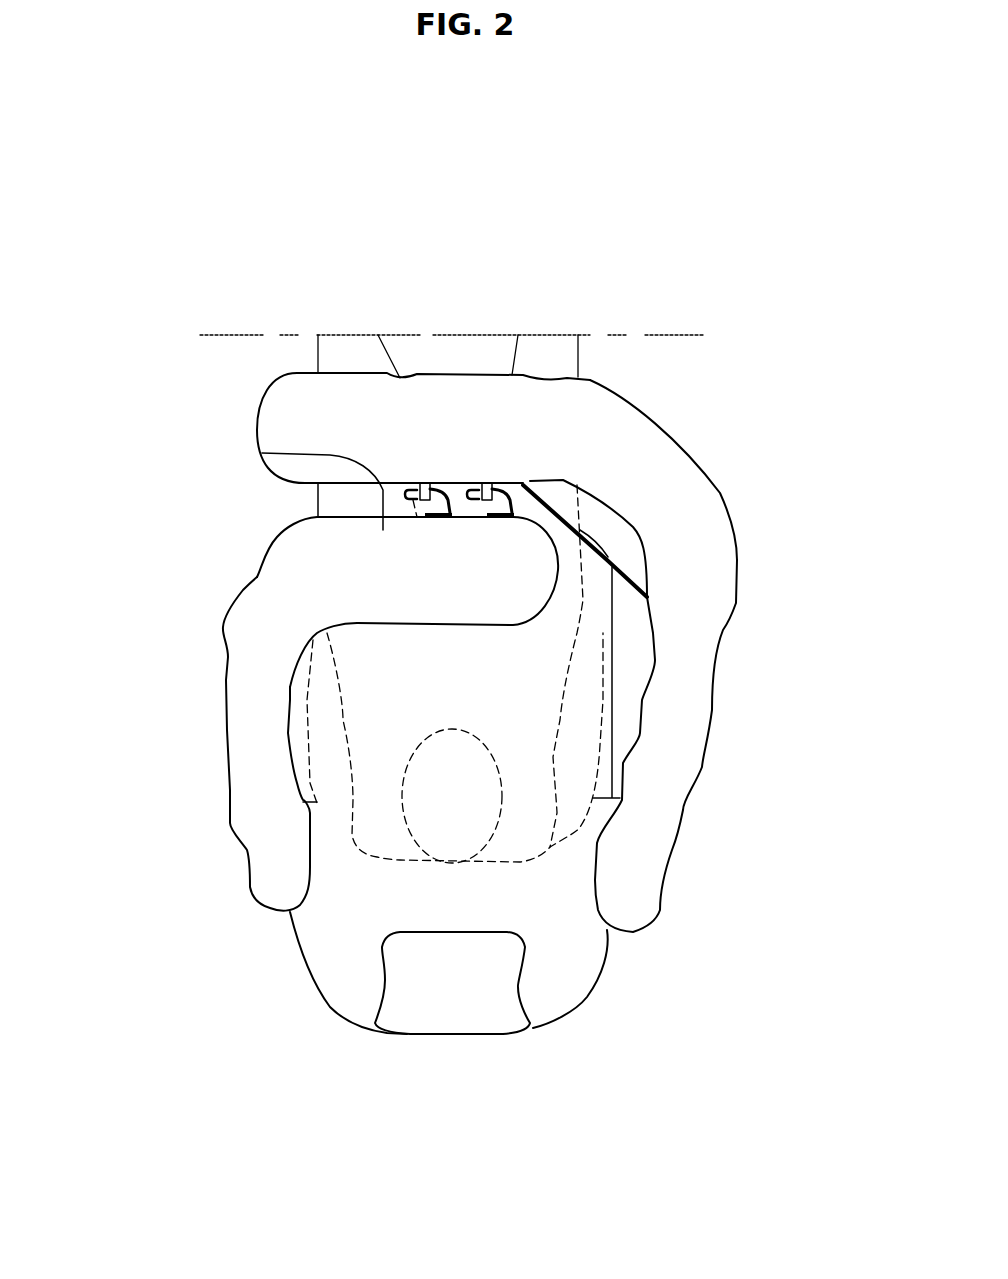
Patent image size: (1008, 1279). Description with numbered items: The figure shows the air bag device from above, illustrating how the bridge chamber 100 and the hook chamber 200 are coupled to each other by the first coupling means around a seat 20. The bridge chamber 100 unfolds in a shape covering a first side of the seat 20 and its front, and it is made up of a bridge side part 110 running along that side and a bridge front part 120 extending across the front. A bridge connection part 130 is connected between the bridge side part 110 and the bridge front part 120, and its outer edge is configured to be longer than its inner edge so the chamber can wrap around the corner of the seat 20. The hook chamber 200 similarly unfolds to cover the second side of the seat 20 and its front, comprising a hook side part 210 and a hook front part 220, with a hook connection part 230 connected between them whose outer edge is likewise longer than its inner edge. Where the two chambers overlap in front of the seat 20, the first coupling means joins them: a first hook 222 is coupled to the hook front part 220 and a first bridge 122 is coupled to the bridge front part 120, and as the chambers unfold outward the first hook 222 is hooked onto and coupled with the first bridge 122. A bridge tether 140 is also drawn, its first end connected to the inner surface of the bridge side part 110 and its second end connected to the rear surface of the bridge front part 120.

The seat 20 is at (455, 1052).
The bridge chamber 100 is at (566, 546).
The bridge side part 110 is at (693, 725).
The bridge front part 120 is at (441, 403).
The first bridge 122 is at (427, 470).
The bridge connection part 130 is at (637, 447).
The bridge tether 140 is at (627, 572).
The hook chamber 200 is at (334, 565).
The hook side part 210 is at (247, 790).
The hook front part 220 is at (262, 453).
The first hook 222 is at (462, 465).
The hook connection part 230 is at (283, 578).